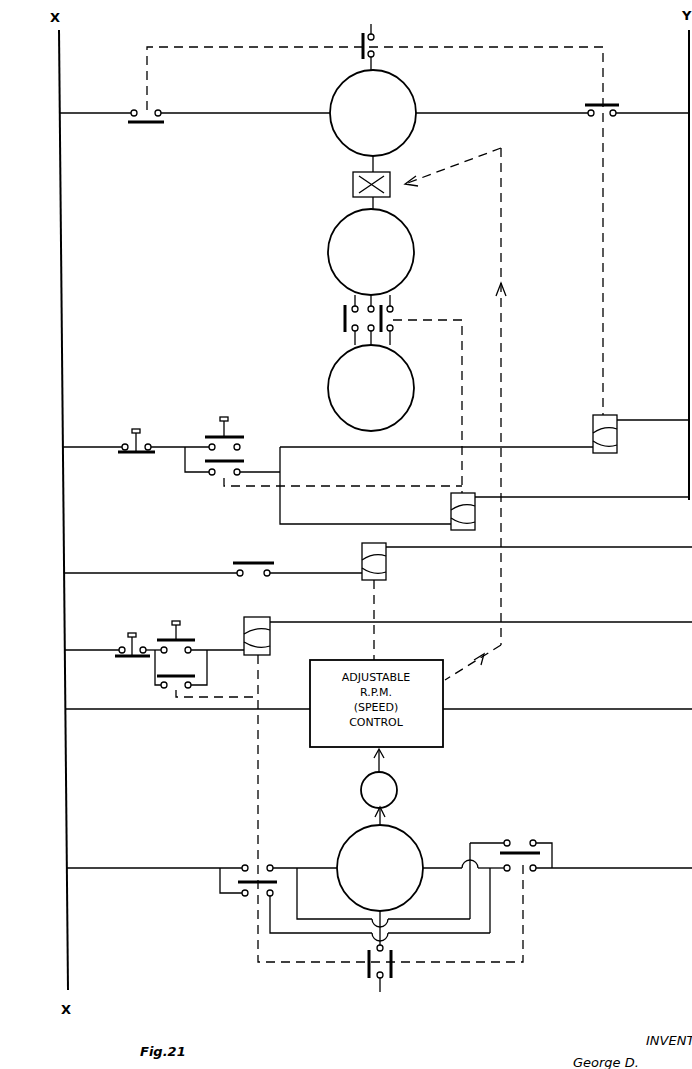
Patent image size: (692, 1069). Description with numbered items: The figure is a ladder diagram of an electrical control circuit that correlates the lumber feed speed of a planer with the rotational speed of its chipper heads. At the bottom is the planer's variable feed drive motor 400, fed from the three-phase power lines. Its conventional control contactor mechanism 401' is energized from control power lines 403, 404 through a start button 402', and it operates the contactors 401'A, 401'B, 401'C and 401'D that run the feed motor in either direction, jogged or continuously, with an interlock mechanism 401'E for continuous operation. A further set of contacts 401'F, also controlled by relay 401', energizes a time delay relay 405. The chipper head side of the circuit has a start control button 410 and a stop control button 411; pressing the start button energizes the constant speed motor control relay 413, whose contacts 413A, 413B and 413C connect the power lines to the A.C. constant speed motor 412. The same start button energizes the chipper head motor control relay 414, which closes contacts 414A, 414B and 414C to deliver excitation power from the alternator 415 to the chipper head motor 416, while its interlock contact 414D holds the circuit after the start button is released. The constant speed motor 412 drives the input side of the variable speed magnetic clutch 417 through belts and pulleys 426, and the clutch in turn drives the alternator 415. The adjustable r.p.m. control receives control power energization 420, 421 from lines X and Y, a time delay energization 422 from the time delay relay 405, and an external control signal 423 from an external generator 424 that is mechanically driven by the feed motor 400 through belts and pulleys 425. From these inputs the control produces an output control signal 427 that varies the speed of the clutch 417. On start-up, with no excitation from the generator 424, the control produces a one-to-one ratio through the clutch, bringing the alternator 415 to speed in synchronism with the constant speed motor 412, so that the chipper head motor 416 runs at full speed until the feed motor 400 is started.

The variable feed drive motor 400 is at (340, 861).
The control contactor mechanism 401' is at (383, 789).
The contactor 401'A is at (226, 891).
The contactor 401'B is at (340, 969).
The contactor 401'C is at (410, 980).
The contactor 401'D is at (581, 843).
The interlock mechanism 401'E is at (180, 676).
The set of contacts 401'F is at (267, 560).
The start button 402' is at (183, 630).
The control power line 403 is at (90, 652).
The control power line 404 is at (566, 622).
The time delay relay 405 is at (388, 576).
The start control button 410 is at (176, 414).
The stop control button 411 is at (125, 428).
The constant speed motor 412 is at (330, 125).
The constant speed motor control relay 413 is at (593, 424).
The contact 413A is at (143, 110).
The contact 413B is at (343, 40).
The contact 413C is at (606, 97).
The chipper head motor control relay 414 is at (451, 512).
The contact 414A is at (352, 329).
The contact 414B is at (352, 300).
The contact 414C is at (395, 317).
The interlock contact 414D is at (314, 472).
The alternator 415 is at (329, 242).
The chipper head motor 416 is at (328, 380).
The variable speed magnetic clutch 417 is at (390, 190).
The control power energization 420 is at (276, 709).
The control power energization 421 is at (528, 709).
The time delay energization 422 is at (376, 640).
The external control signal 423 is at (383, 764).
The external generator 424 is at (359, 787).
The belts and pulleys 425 is at (384, 820).
The belts and pulleys 426 is at (362, 166).
The output control signal 427 is at (504, 340).